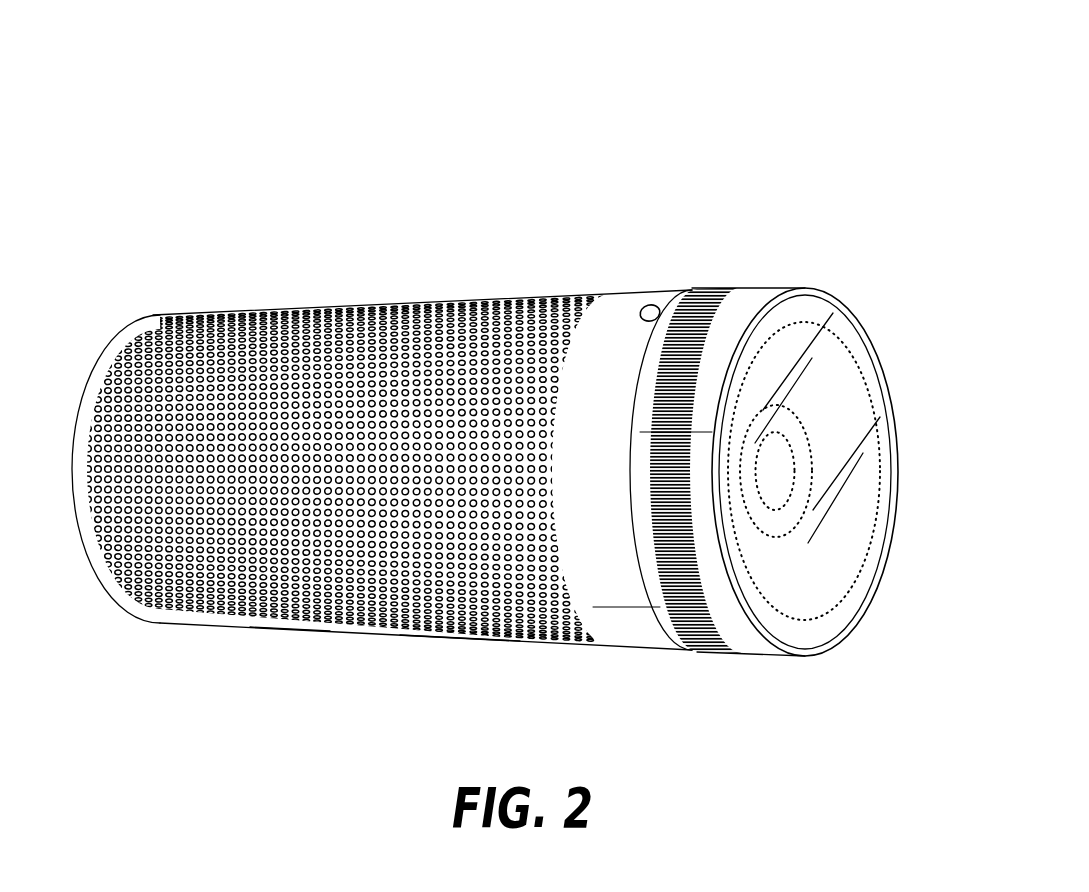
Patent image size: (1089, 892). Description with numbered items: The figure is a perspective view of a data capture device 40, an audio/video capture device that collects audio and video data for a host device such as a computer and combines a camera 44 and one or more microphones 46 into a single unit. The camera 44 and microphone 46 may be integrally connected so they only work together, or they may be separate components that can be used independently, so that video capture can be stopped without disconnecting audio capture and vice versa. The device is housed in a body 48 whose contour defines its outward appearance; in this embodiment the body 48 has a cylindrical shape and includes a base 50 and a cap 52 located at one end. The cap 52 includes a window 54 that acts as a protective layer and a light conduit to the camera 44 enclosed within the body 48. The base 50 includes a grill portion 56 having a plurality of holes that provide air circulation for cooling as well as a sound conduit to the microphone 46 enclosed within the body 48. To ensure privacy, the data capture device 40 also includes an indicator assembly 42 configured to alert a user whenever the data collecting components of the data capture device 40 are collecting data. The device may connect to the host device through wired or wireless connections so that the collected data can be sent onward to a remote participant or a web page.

The data capture device 40 is at (467, 100).
The indicator assembly 42 is at (645, 278).
The camera 44 is at (800, 432).
The microphone 46 is at (325, 290).
The body 48 is at (182, 625).
The base 50 is at (452, 640).
The cap 52 is at (763, 657).
The window 54 is at (858, 498).
The grill portion 56 is at (290, 625).